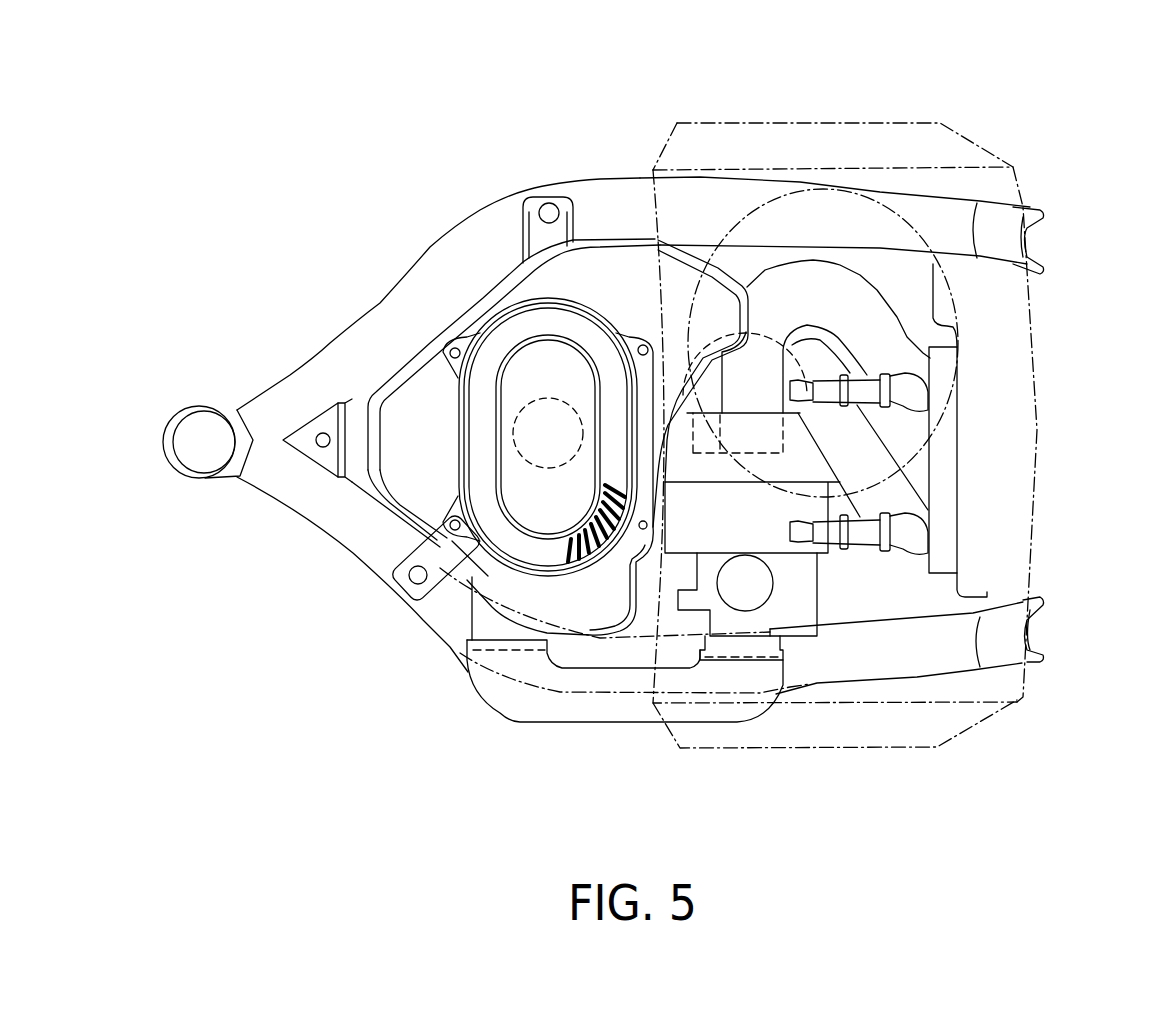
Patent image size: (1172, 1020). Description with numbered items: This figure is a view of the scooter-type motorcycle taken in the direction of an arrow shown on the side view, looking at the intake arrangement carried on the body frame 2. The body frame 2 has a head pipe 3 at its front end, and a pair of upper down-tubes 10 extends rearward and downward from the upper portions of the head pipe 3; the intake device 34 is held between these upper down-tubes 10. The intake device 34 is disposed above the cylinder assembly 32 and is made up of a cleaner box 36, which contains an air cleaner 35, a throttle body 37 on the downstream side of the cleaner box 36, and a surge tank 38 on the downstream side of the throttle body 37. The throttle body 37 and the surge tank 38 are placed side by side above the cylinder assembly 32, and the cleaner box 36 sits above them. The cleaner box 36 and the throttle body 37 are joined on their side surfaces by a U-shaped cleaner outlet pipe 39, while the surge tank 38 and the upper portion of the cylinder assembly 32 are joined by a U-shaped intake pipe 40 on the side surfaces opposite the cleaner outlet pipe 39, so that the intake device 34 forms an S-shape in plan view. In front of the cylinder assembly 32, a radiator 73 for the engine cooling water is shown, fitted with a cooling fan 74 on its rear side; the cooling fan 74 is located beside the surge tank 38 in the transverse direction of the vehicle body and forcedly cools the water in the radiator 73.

The body frame 2 is at (620, 165).
The head pipe 3 is at (207, 473).
The upper down-tubes 10 is at (410, 287).
The cylinder assembly 32 is at (963, 303).
The intake device 34 is at (622, 735).
The air cleaner 35 is at (547, 325).
The cleaner box 36 is at (393, 497).
The throttle body 37 is at (790, 610).
The surge tank 38 is at (773, 533).
The cleaner outlet pipe 39 is at (515, 707).
The intake pipe 40 is at (850, 290).
The radiator 73 is at (1027, 507).
The cooling fan 74 is at (793, 190).